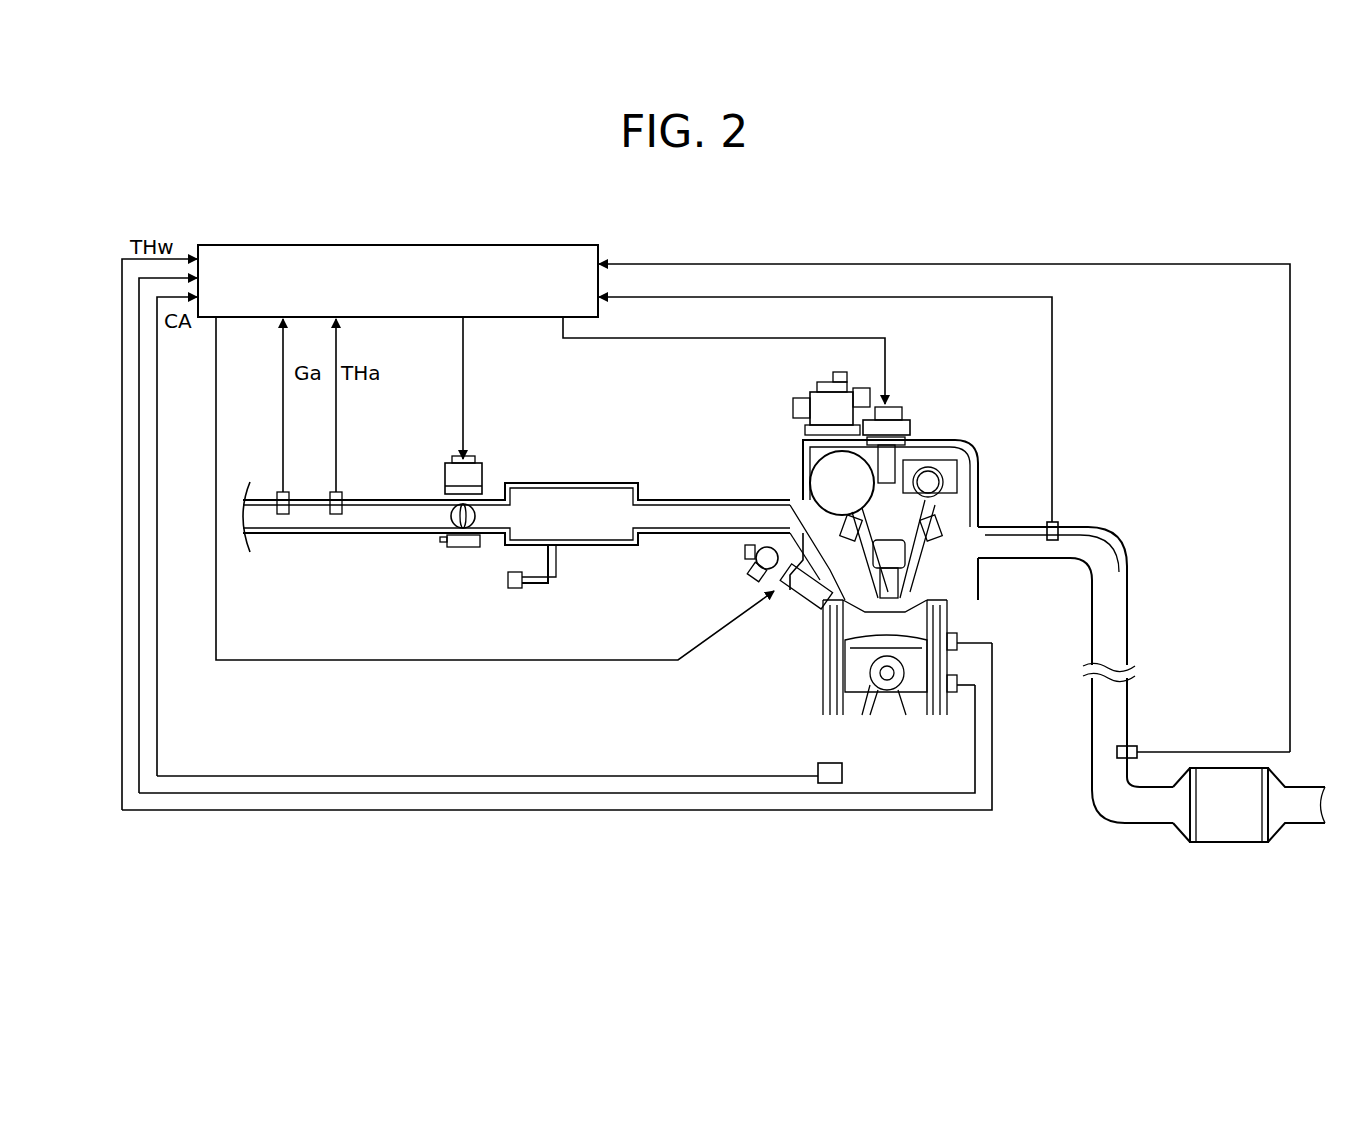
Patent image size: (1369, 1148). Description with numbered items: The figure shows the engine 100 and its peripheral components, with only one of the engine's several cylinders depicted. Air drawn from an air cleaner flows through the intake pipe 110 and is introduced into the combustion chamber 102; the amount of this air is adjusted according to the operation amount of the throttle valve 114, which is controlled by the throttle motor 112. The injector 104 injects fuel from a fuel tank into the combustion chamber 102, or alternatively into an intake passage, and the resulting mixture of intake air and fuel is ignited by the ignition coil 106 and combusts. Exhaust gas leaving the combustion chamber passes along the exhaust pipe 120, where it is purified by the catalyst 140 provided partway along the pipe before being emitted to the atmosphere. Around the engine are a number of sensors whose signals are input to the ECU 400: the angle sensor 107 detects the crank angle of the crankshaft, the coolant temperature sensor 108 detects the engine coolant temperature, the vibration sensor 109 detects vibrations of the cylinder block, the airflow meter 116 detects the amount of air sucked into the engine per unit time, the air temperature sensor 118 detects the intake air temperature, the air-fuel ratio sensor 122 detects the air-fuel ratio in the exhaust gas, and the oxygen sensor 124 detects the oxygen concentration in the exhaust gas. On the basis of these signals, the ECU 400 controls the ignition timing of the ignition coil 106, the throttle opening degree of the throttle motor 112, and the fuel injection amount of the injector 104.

The ECU 400 is at (400, 245).
The engine 100 is at (760, 668).
The combustion chamber 102 is at (907, 618).
The injector 104 is at (810, 595).
The ignition coil 106 is at (897, 405).
The angle sensor 107 is at (822, 762).
The coolant temperature sensor 108 is at (958, 640).
The vibration sensor 109 is at (958, 680).
The intake pipe 110 is at (600, 548).
The throttle motor 112 is at (490, 465).
The throttle valve 114 is at (452, 518).
The airflow meter 116 is at (277, 492).
The air temperature sensor 118 is at (330, 492).
The exhaust pipe 120 is at (1098, 530).
The air-fuel ratio sensor 122 is at (1047, 523).
The oxygen sensor 124 is at (1137, 748).
The catalyst 140 is at (1243, 843).